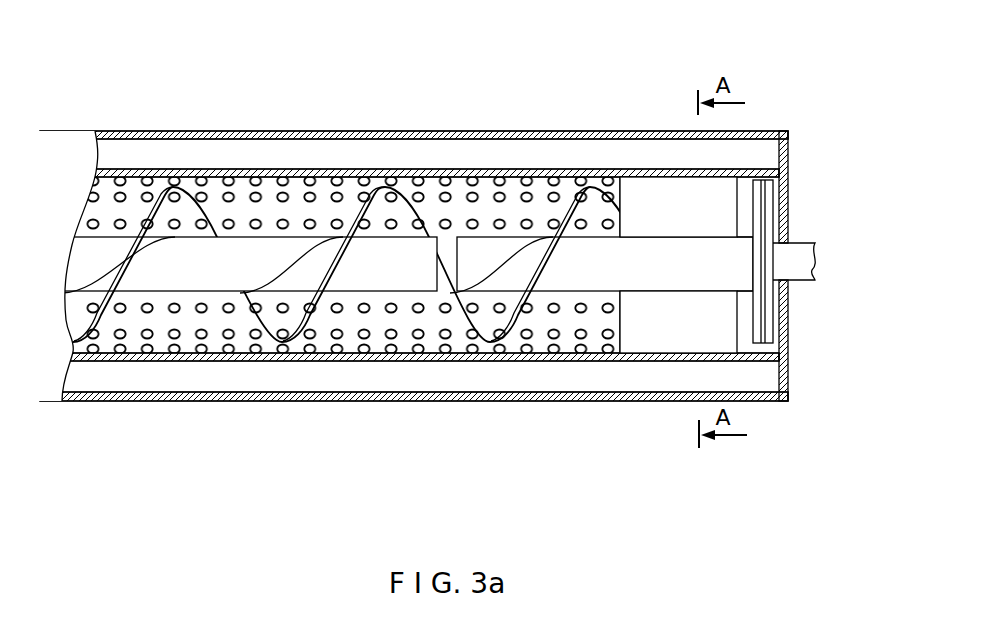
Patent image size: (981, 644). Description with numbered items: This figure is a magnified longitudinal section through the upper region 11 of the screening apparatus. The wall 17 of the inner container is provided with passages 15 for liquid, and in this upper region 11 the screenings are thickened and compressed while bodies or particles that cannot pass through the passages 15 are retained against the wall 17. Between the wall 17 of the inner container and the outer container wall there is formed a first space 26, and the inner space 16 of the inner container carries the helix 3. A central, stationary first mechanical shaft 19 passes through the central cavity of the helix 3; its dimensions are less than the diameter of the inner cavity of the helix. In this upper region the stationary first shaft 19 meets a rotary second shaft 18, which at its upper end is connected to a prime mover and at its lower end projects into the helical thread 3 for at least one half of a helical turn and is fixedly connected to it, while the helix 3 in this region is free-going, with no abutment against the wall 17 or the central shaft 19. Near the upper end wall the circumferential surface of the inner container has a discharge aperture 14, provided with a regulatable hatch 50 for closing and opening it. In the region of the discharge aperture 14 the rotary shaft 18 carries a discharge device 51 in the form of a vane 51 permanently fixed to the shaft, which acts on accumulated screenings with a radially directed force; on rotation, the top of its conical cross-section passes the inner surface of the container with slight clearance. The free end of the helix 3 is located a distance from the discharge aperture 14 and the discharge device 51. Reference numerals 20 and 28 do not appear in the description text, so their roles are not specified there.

The helix 3 is at (283, 333).
The upper region 11 is at (374, 120).
The discharge aperture 14 is at (728, 187).
The passages 15 is at (364, 358).
The inner space of the first container 16 is at (449, 197).
The wall of the inner container 17 is at (433, 170).
The rotary second shaft 18 is at (512, 253).
The central shaft 19 is at (235, 252).
The outer tube 20 is at (613, 131).
The first space 26 is at (467, 380).
The end cap 28 is at (788, 196).
The regulatable hatch 50 is at (660, 182).
The discharge device 51 is at (643, 338).